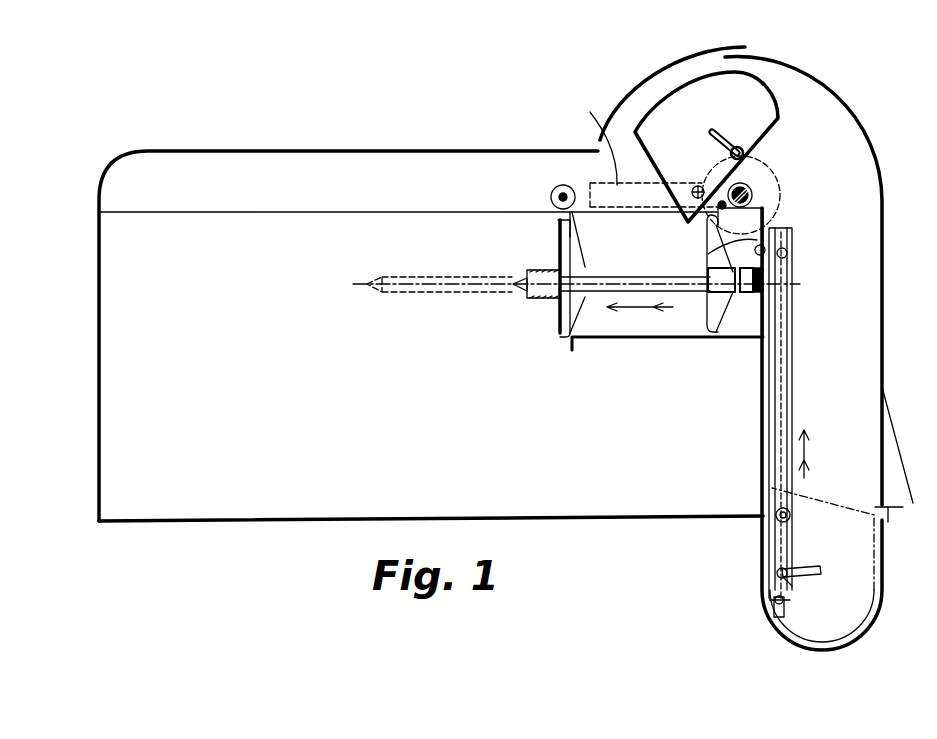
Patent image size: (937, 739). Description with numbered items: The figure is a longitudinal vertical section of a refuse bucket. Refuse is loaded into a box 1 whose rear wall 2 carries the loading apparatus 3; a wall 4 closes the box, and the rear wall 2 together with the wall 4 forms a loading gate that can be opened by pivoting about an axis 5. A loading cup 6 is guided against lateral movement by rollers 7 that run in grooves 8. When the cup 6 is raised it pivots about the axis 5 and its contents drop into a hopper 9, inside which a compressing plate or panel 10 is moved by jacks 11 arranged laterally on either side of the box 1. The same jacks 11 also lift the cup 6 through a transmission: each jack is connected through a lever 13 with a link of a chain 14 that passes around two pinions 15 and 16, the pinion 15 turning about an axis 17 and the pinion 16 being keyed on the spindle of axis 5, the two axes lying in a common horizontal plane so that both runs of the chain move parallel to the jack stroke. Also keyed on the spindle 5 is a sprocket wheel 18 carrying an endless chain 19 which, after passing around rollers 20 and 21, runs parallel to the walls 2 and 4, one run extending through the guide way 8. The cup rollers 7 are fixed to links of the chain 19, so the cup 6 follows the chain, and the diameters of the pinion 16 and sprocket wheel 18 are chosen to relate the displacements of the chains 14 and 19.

The box 1 is at (280, 153).
The rear wall 2 is at (883, 356).
The loading apparatus 3 is at (899, 447).
The wall 4 is at (763, 422).
The axis 5 is at (755, 195).
The loading cup 6 is at (767, 87).
The rollers 7 is at (790, 517).
The grooves 8 is at (793, 382).
The hopper 9 is at (672, 333).
The plate or panel 10 is at (702, 338).
The jacks 11 is at (607, 288).
The lever 13 is at (727, 222).
The chain 14 is at (599, 136).
The pinion 15 is at (562, 185).
The pinion 16 is at (750, 186).
The axis 17 is at (558, 203).
The sprocket wheel 18 is at (742, 183).
The endless chain 19 is at (783, 220).
The roller 20 is at (713, 255).
The roller 21 is at (772, 605).